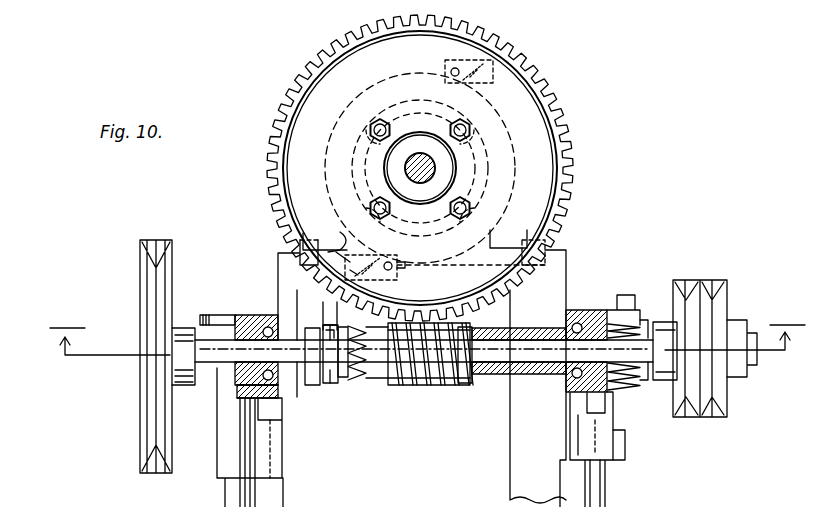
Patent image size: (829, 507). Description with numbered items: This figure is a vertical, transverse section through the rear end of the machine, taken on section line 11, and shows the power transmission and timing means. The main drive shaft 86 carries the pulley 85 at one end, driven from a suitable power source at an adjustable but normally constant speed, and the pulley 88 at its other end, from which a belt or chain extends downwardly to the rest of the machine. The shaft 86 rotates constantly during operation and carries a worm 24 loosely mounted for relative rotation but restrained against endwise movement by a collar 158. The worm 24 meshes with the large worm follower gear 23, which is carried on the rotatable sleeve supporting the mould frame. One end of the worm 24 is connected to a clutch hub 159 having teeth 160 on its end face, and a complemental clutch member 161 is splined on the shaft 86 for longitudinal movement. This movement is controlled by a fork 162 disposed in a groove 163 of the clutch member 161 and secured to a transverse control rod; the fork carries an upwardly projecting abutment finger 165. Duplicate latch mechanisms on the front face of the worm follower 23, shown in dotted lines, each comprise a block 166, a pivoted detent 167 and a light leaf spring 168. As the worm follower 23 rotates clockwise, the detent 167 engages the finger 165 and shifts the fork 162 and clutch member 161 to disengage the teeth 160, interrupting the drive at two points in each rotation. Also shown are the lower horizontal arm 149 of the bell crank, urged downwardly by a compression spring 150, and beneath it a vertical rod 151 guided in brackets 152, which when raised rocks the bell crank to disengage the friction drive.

The worm follower gear 23 is at (306, 73).
The block 166 is at (500, 68).
The pivoted detent 167 is at (324, 236).
The light leaf spring 168 is at (372, 282).
The abutment finger 165 is at (322, 296).
The pulley 85 is at (150, 276).
The section line 11 is at (427, 330).
The groove 163 is at (312, 386).
The fork 162 is at (330, 384).
The clutch member 161 is at (343, 378).
The clutch teeth 160 is at (378, 380).
The clutch hub 159 is at (418, 386).
The worm 24 is at (443, 386).
The collar 158 is at (470, 383).
The main drive shaft 86 is at (545, 352).
The lower horizontal arm 149 is at (575, 418).
The compression spring 150 is at (645, 322).
The pulley 88 is at (716, 314).
The brackets 152 is at (616, 452).
The vertical rod 151 is at (603, 486).